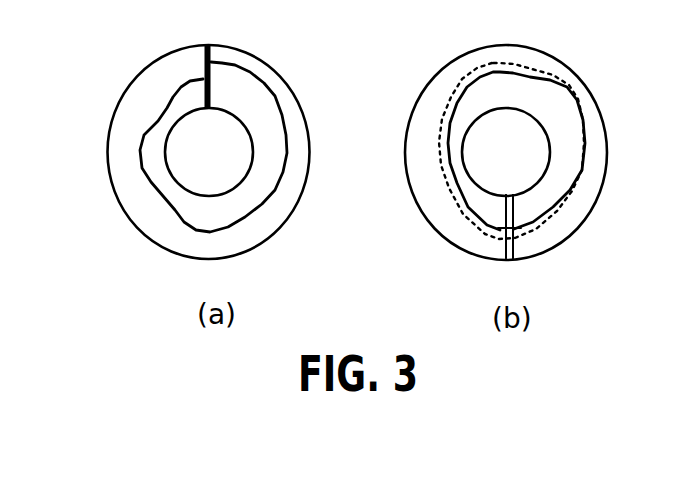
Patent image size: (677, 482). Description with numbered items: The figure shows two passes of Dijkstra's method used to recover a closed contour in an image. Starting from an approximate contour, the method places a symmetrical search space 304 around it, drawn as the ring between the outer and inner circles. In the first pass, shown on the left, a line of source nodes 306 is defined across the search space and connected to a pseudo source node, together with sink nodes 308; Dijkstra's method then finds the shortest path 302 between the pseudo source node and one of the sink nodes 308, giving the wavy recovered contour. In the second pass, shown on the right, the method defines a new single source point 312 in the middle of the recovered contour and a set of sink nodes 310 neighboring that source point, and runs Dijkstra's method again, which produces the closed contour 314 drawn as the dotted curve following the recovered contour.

The shortest path 302 is at (160, 193).
The symmetrical search space 304 is at (122, 143).
The line of source nodes 306 is at (213, 55).
The sink nodes 308 is at (203, 70).
The set of sink nodes 310 is at (514, 228).
The single source point 312 is at (506, 229).
The closed contour 314 is at (583, 122).